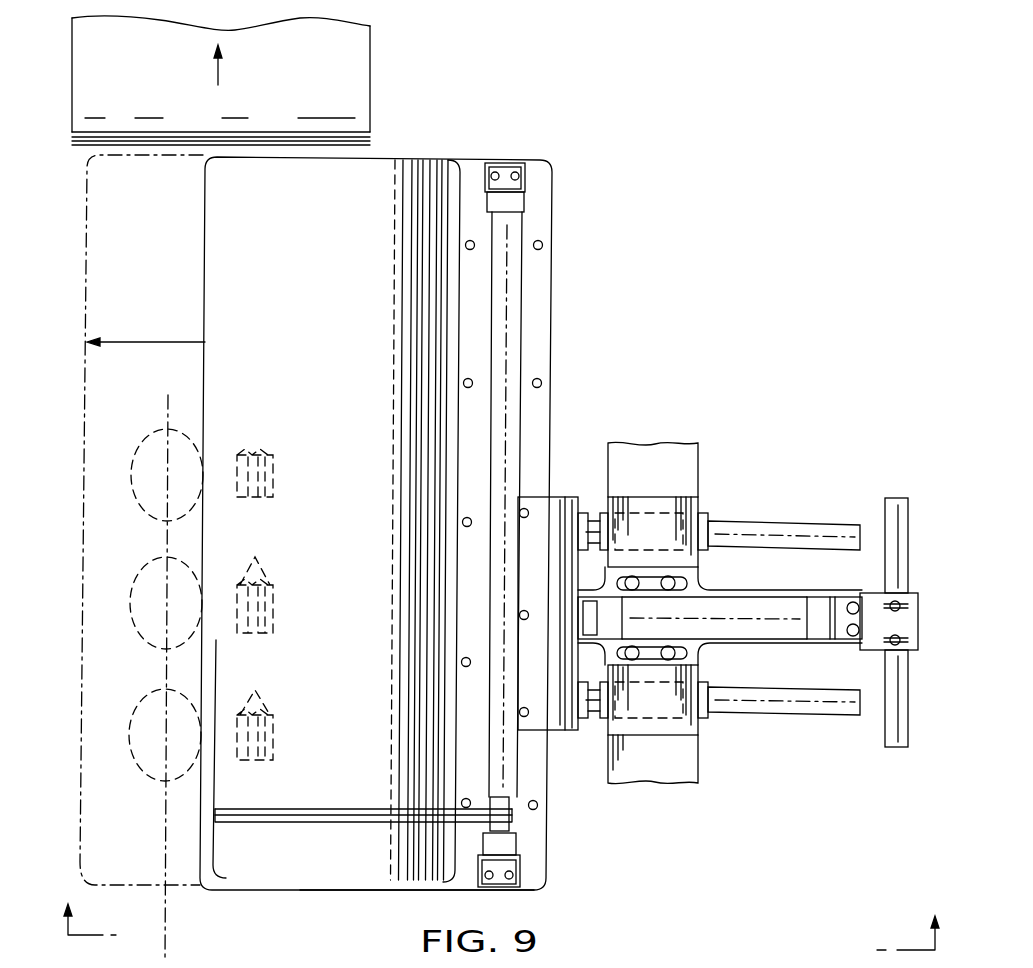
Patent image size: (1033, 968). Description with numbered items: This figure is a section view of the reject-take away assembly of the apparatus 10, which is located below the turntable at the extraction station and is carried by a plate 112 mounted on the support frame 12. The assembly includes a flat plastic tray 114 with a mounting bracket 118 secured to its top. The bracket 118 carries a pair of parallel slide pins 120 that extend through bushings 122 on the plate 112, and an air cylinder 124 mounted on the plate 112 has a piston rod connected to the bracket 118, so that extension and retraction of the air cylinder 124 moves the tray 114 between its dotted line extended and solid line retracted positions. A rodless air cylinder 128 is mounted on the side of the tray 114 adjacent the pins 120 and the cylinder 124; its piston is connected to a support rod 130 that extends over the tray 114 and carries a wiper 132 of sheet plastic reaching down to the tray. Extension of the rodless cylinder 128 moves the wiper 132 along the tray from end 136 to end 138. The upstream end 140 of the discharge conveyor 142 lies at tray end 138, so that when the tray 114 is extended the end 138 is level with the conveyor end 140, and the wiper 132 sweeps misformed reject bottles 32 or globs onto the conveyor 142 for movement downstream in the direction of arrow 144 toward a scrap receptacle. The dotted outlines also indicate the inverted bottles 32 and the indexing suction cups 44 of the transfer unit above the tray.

The apparatus 10 is at (498, 552).
The support frame 12 is at (885, 508).
The bottles 32 is at (150, 440).
The indexing suction cups 44 is at (258, 450).
The plate 112 is at (882, 596).
The tray 114 is at (310, 257).
The mounting bracket 118 is at (565, 497).
The slide pins 120 is at (740, 521).
The bushings 122 is at (655, 505).
The air cylinder 124 is at (737, 620).
The rodless air cylinder 128 is at (521, 352).
The support rod 130 is at (265, 823).
The wiper 132 is at (238, 807).
The tray end 136 is at (298, 876).
The tray end 138 is at (403, 160).
The upstream end of discharge conveyor 140 is at (152, 148).
The discharge conveyor 142 is at (318, 109).
The arrow 144 is at (218, 68).